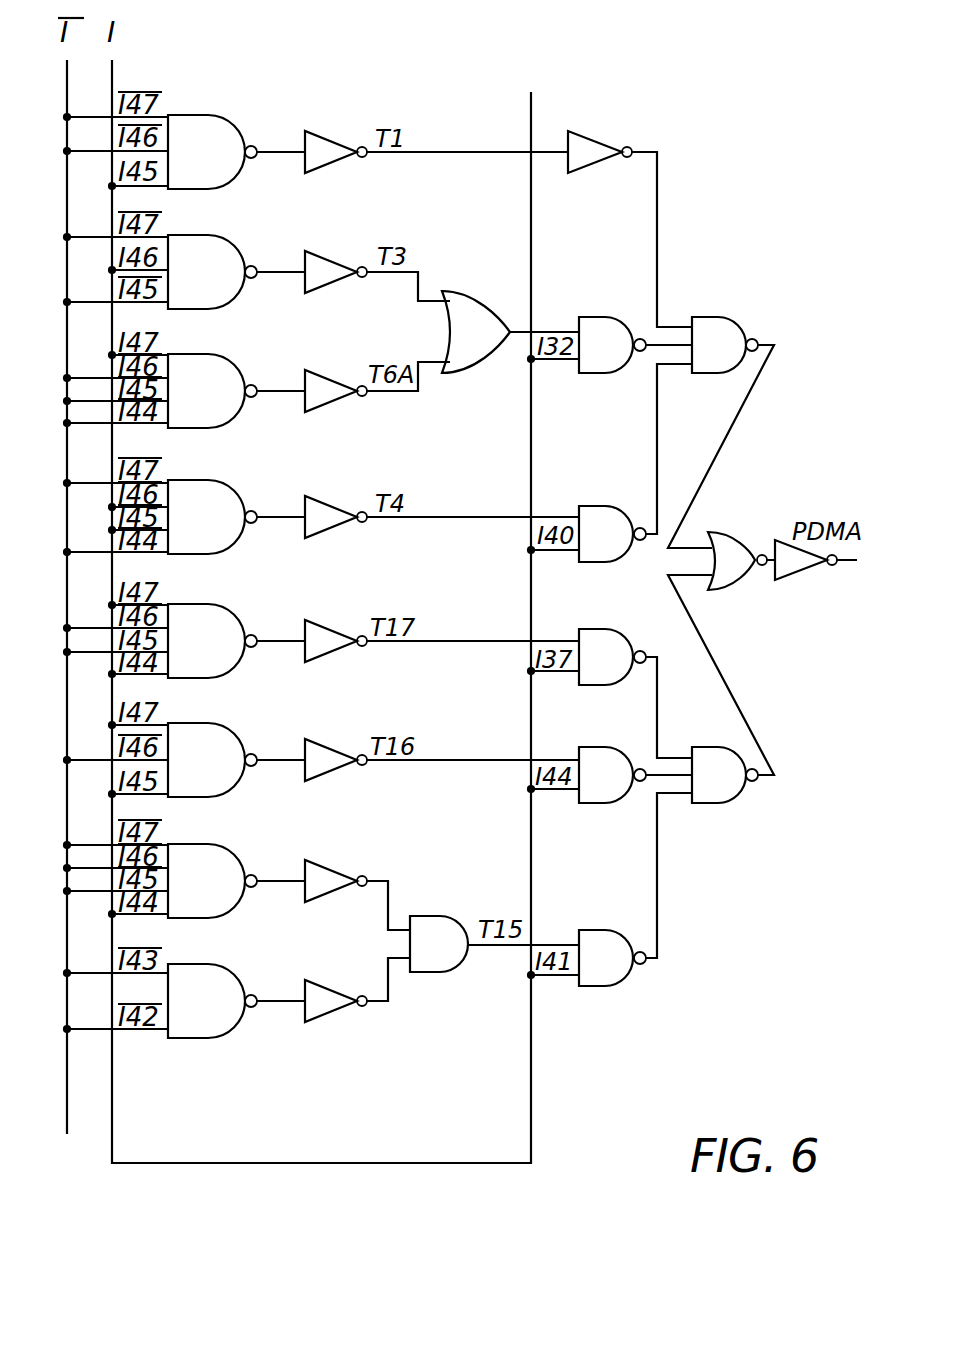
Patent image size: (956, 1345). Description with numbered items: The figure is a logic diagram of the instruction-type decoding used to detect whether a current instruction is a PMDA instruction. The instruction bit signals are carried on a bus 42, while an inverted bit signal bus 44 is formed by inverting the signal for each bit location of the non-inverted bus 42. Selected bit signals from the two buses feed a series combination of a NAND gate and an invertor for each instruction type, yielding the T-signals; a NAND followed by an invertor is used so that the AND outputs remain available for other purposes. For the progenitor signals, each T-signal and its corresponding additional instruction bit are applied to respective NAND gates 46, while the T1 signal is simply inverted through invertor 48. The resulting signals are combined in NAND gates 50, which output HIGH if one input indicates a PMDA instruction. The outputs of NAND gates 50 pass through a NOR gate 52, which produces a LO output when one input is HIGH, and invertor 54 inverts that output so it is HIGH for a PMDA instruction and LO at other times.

The bus 42 is at (115, 1104).
The inverted bit signal bus 44 is at (69, 1120).
The NAND gates 46 is at (625, 373).
The invertor 48 is at (598, 140).
The NAND gates 50 is at (724, 317).
The NOR gate 52 is at (707, 532).
The invertor 54 is at (775, 580).